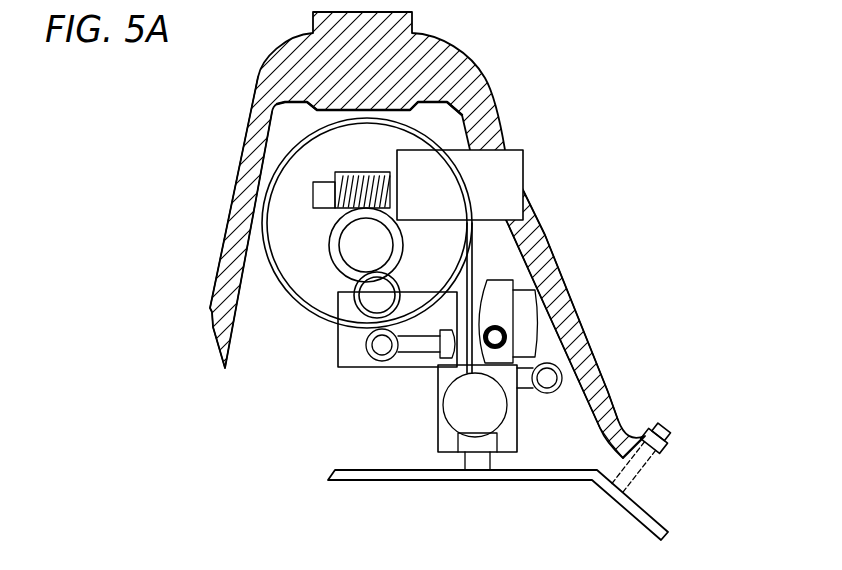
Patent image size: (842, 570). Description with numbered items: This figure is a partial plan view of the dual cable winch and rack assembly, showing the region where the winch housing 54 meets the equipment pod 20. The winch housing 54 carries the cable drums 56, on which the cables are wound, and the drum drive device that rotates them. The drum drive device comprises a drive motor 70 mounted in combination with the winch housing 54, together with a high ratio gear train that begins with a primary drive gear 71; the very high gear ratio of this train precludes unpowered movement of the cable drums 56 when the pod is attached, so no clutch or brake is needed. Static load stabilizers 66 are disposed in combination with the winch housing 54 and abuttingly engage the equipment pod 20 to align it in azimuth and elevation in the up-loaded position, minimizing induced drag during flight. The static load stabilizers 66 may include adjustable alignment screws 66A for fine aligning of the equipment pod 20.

The equipment pod 20 is at (537, 520).
The winch housing 54 is at (400, 107).
The cable drum 56 is at (297, 303).
The static load stabilizer 66 is at (227, 232).
The adjustable alignment screw 66A is at (657, 432).
The drive motor 70 is at (488, 175).
The primary drive gear 71 is at (332, 265).